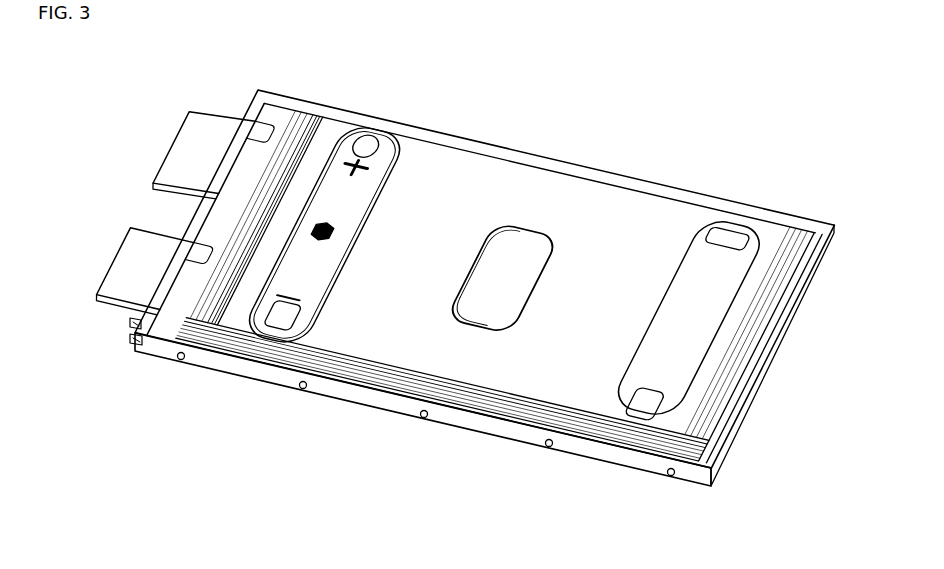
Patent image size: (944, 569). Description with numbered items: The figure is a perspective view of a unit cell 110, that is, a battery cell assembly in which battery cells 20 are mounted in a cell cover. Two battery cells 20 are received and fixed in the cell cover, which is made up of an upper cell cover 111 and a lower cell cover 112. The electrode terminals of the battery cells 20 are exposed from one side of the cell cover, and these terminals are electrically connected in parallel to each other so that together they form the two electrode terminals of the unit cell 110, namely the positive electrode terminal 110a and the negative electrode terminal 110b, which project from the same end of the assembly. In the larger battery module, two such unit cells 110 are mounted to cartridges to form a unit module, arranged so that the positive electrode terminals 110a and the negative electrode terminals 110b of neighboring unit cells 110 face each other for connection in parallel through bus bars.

The unit cell 110 is at (86, 104).
The positive electrode terminal 110a is at (125, 262).
The negative electrode terminal 110b is at (185, 152).
The upper cell cover 111 is at (371, 347).
The lower cell cover 112 is at (393, 424).
The battery cell 20 is at (138, 323).